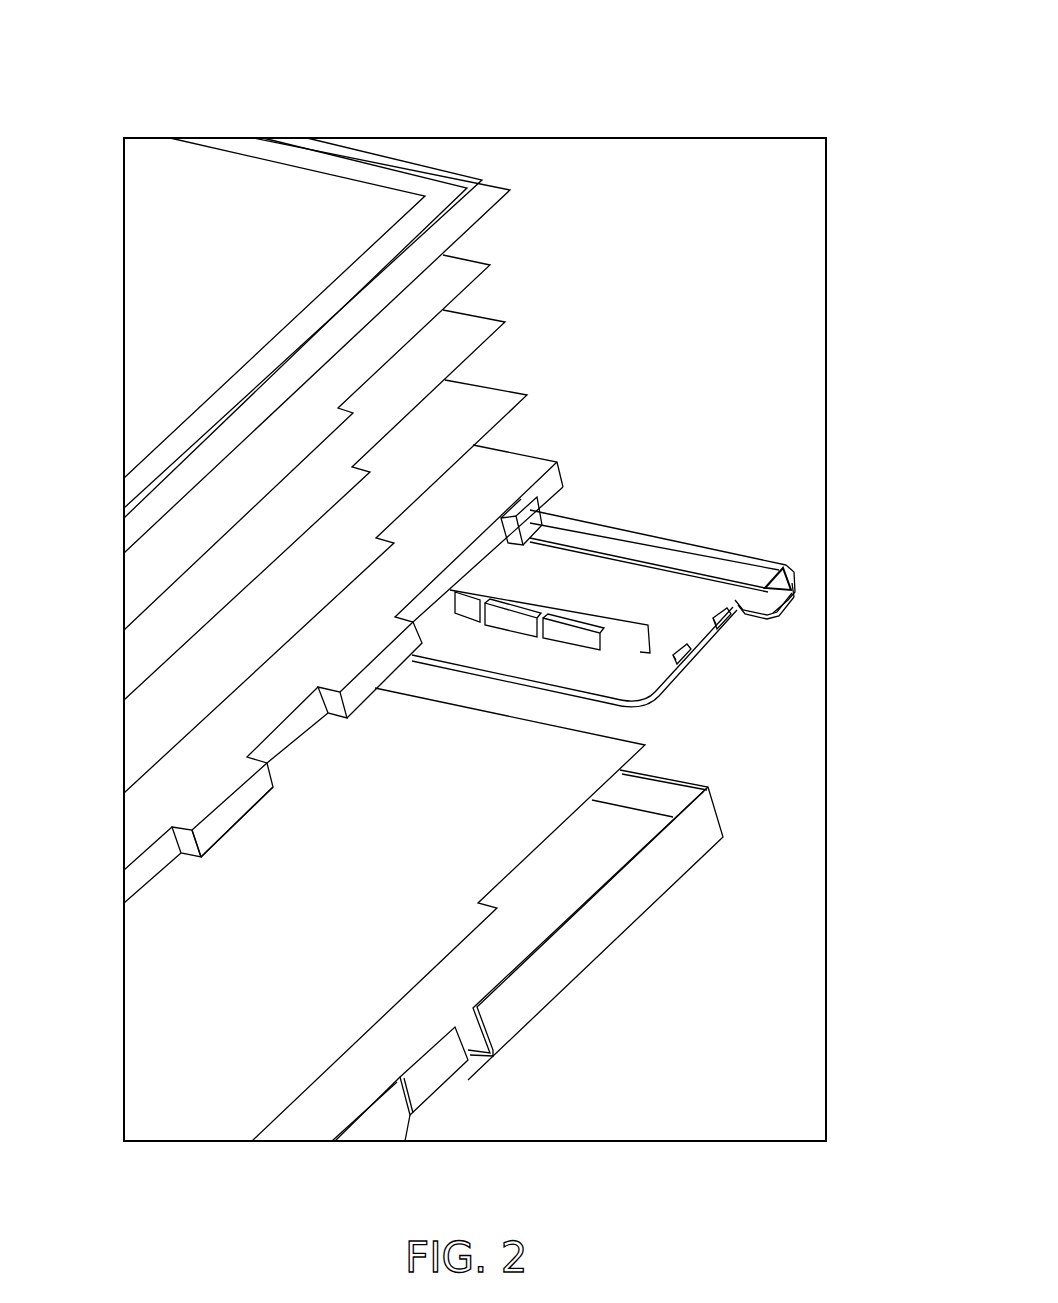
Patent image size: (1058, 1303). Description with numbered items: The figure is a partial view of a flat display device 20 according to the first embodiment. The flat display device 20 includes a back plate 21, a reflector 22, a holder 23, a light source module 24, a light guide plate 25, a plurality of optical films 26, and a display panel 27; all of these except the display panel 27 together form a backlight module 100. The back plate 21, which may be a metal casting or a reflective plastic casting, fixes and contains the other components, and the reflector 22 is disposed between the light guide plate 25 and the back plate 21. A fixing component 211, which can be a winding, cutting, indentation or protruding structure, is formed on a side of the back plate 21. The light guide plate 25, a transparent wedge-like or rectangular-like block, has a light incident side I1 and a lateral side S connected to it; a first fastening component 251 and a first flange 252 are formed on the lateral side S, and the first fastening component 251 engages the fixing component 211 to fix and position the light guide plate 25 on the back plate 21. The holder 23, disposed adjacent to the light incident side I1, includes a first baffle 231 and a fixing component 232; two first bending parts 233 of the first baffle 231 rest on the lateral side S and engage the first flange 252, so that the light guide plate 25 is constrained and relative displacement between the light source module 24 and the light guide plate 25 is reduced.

The flat display device 20 is at (699, 90).
The backlight module 100 is at (745, 410).
The back plate 21 is at (563, 955).
The fixing component 211 is at (440, 1066).
The reflector 22 is at (170, 1012).
The holder 23 is at (712, 576).
The first baffle 231 is at (770, 613).
The fixing component 232 is at (790, 580).
The first bending parts 233 is at (715, 622).
The light source module 24 is at (632, 643).
The light guide plate 25 is at (366, 702).
The first fastening component 251 is at (233, 813).
The first flange 252 is at (530, 516).
The optical films 26 is at (483, 255).
The display panel 27 is at (172, 320).
The light incident side I1 is at (560, 468).
The lateral side S is at (181, 848).